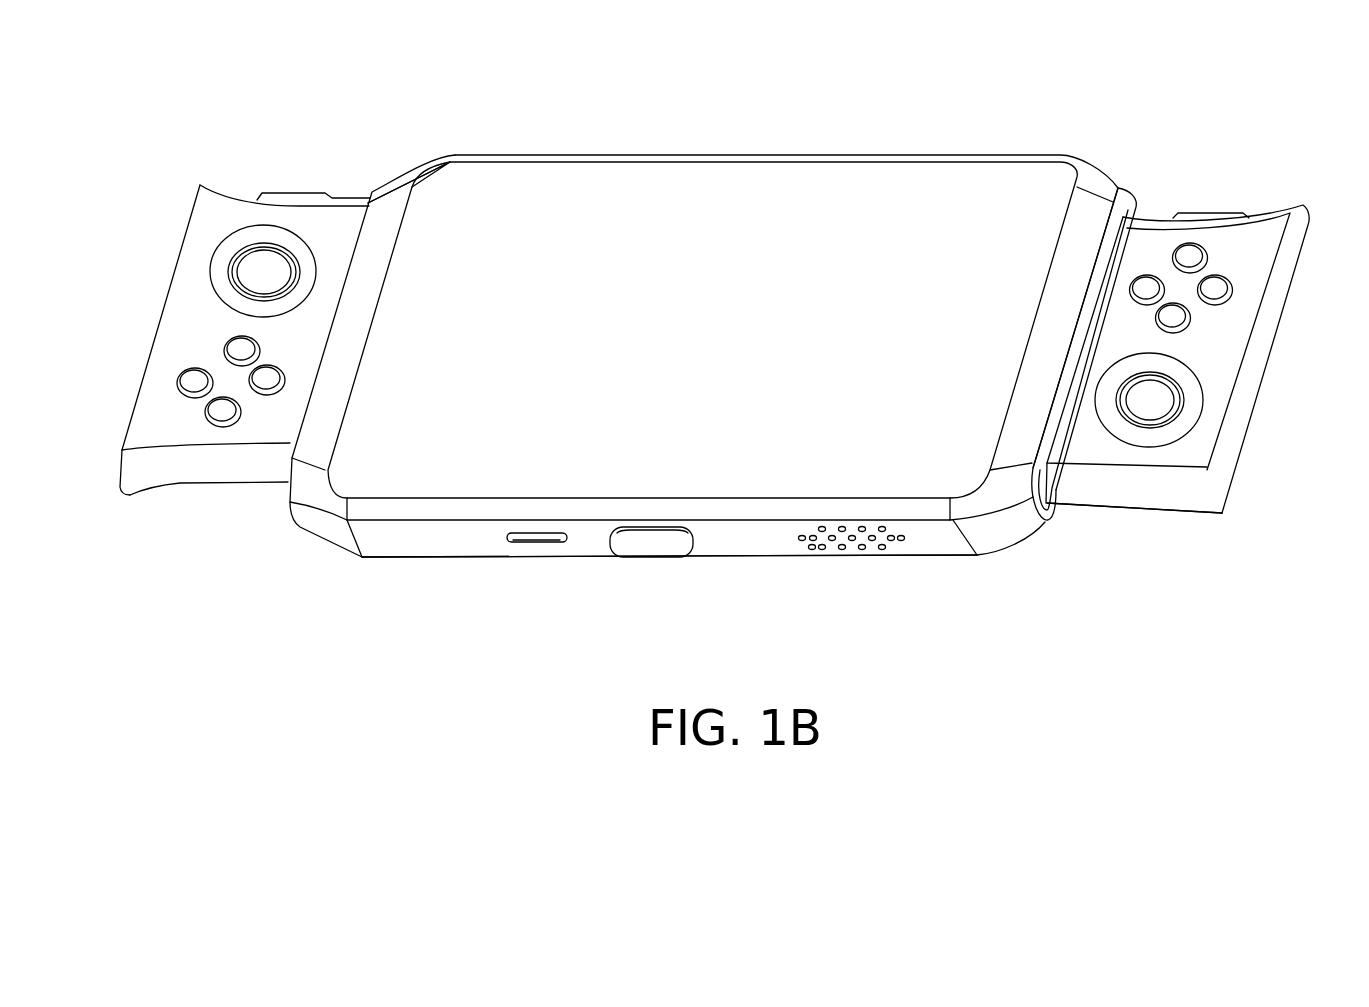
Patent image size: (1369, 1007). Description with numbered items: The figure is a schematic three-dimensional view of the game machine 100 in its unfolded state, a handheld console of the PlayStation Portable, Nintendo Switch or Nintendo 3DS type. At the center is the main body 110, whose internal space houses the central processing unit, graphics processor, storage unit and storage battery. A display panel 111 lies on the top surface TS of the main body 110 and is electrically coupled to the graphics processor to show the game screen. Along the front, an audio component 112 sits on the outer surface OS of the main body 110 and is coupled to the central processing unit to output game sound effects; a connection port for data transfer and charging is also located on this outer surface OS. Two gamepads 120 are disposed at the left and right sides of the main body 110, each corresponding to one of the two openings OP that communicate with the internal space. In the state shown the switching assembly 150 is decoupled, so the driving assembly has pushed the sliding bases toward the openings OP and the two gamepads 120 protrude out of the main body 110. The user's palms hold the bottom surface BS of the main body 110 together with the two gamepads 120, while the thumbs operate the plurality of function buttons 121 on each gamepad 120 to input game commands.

The game machine 100 is at (736, 387).
The main body 110 is at (713, 363).
The display panel 111 is at (770, 238).
The audio component 112 is at (863, 537).
The gamepads 120 is at (1199, 359).
The function buttons 121 is at (1162, 390).
The switching assembly 150 is at (653, 543).
The top surface TS is at (385, 230).
The outer surface OS is at (445, 537).
The bottom surface BS is at (1152, 508).
The openings OP is at (1126, 203).